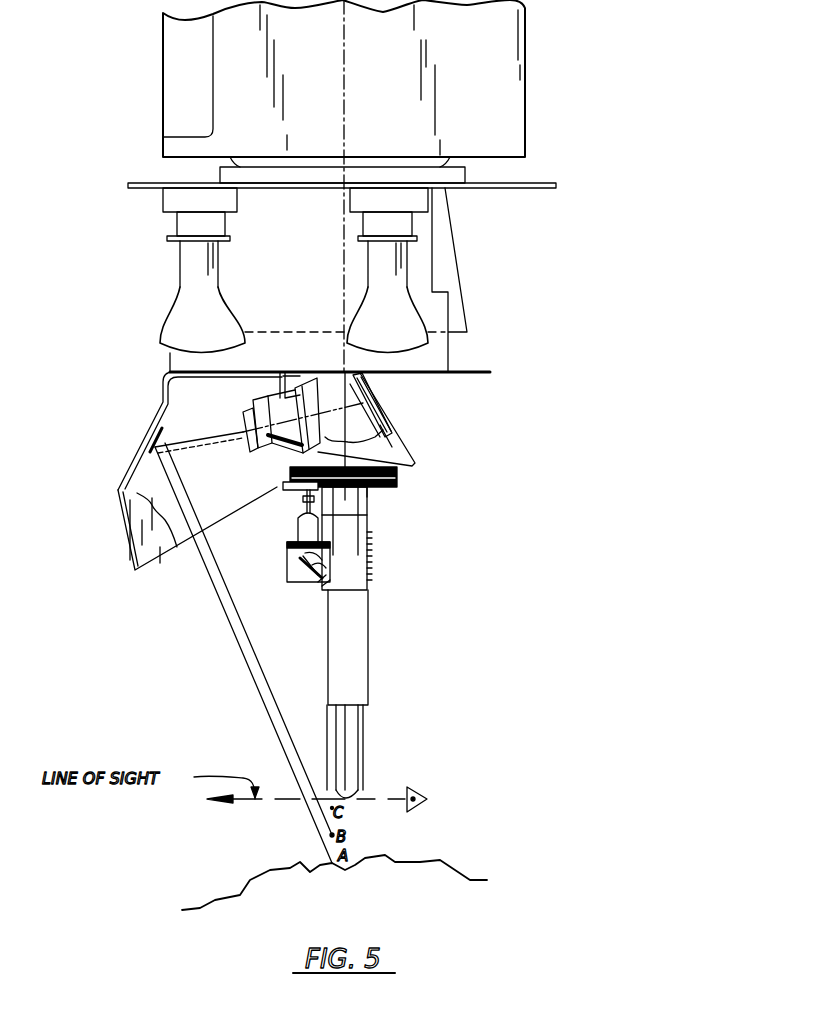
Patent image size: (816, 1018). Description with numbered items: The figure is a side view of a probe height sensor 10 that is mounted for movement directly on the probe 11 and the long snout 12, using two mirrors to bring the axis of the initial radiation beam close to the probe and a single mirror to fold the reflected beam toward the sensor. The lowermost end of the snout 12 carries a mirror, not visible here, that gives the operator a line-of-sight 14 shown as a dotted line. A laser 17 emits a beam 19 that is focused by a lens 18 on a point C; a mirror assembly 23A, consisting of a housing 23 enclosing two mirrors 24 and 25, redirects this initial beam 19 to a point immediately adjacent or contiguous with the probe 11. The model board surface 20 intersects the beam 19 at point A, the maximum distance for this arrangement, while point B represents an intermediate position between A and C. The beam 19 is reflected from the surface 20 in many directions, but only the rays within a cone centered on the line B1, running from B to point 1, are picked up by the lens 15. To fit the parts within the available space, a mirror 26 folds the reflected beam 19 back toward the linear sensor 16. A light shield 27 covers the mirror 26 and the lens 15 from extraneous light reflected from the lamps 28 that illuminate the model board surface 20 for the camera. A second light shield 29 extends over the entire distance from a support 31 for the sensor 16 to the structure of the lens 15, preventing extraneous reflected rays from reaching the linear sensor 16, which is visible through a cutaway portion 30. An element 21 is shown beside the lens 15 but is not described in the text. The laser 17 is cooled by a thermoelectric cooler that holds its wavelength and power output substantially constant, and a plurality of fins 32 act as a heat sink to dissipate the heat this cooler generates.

The point of line B1 1 is at (281, 372).
The probe height sensor 10 is at (147, 403).
The probe 11 is at (357, 491).
The long snout 12 is at (353, 646).
The line-of-sight 14 is at (277, 803).
The lens 15 is at (272, 463).
The linear sensor 16 is at (368, 407).
The laser 17 is at (300, 493).
The lens 18 is at (300, 527).
The beam 19 is at (325, 735).
The model board surface 20 is at (440, 862).
The lens mount 21 is at (247, 443).
The housing 23 is at (288, 578).
The mirror assembly 23A is at (274, 566).
The mirror 24 is at (317, 583).
The mirror 25 is at (323, 587).
The mirror 26 is at (160, 442).
The light shield 27 is at (121, 518).
The lamps 28 is at (393, 303).
The light shield 29 is at (400, 453).
The cutaway portion 30 is at (383, 442).
The support 31 is at (363, 383).
The fins 32 is at (370, 488).